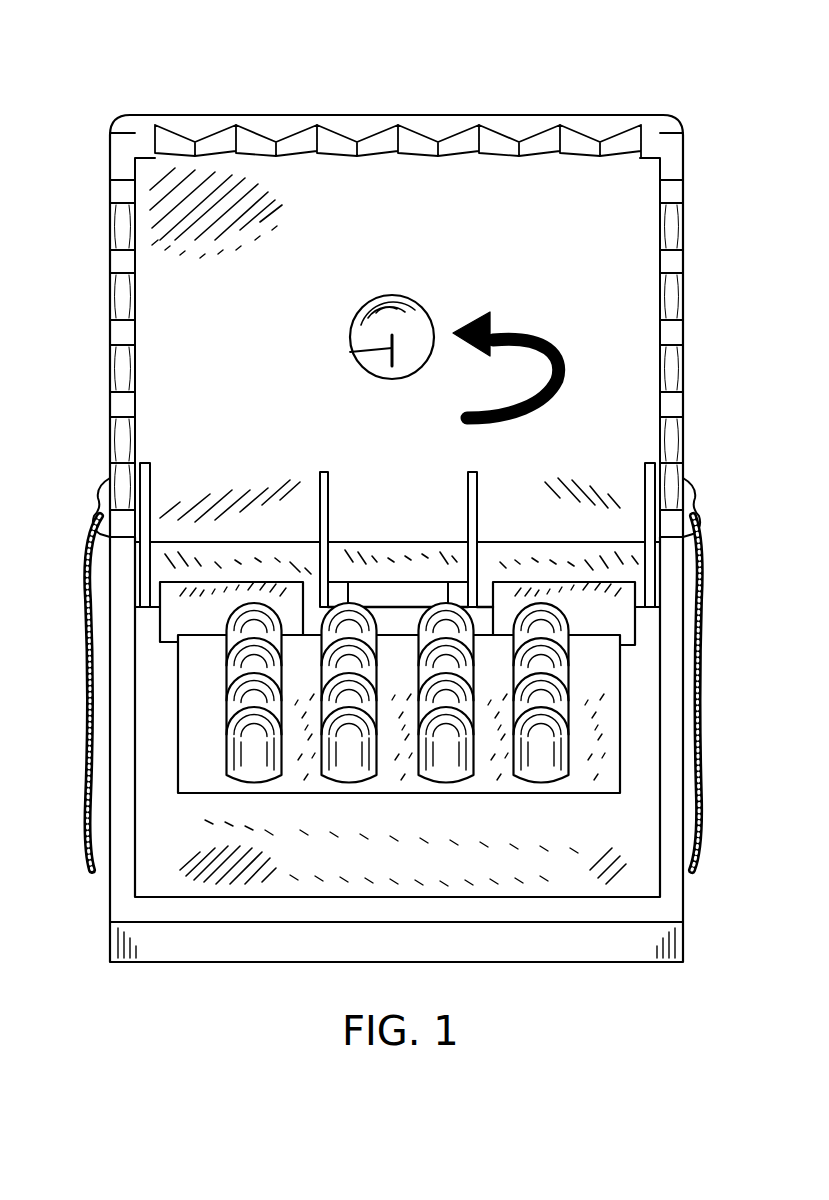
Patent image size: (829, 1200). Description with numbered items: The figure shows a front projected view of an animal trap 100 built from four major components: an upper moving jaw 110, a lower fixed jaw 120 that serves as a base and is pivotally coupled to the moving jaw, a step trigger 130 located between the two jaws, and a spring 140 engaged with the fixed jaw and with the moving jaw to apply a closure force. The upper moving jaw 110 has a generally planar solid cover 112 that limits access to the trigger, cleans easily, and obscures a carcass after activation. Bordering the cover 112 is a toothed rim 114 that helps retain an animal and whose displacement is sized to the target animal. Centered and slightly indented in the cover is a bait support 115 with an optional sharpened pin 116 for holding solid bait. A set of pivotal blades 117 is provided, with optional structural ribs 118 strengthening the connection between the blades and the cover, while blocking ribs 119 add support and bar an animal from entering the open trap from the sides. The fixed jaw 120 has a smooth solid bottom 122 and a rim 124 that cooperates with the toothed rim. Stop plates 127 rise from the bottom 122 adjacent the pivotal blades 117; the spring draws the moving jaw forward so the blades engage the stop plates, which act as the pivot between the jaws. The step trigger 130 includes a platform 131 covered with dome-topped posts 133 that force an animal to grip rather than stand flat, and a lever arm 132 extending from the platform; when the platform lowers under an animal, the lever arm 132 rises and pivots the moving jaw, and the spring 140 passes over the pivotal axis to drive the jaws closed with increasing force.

The animal trap 100 is at (675, 60).
The upper moving jaw 110 is at (131, 116).
The cover 112 is at (568, 212).
The toothed rim 114 is at (125, 230).
The bait support 115 is at (427, 318).
The pin 116 is at (350, 352).
The pivotal blades 117 is at (288, 553).
The structural ribs 118 is at (383, 468).
The blocking ribs 119 is at (148, 470).
The lower fixed jaw 120 is at (688, 943).
The bottom 122 is at (318, 864).
The rim 124 is at (122, 888).
The stop plates 127 is at (165, 620).
The step trigger 130 is at (178, 792).
The platform 131 is at (485, 792).
The lever arm 132 is at (420, 622).
The posts 133 is at (566, 766).
The spring 140 is at (705, 747).